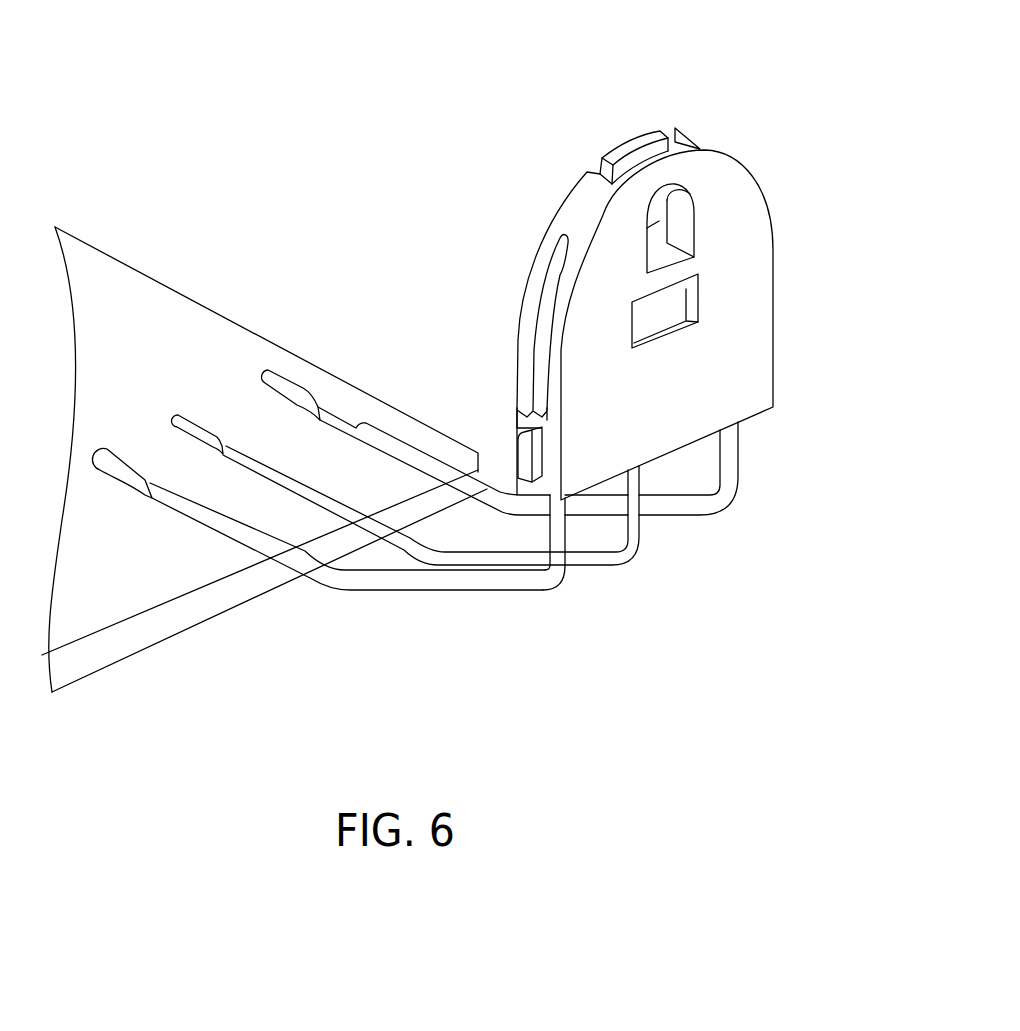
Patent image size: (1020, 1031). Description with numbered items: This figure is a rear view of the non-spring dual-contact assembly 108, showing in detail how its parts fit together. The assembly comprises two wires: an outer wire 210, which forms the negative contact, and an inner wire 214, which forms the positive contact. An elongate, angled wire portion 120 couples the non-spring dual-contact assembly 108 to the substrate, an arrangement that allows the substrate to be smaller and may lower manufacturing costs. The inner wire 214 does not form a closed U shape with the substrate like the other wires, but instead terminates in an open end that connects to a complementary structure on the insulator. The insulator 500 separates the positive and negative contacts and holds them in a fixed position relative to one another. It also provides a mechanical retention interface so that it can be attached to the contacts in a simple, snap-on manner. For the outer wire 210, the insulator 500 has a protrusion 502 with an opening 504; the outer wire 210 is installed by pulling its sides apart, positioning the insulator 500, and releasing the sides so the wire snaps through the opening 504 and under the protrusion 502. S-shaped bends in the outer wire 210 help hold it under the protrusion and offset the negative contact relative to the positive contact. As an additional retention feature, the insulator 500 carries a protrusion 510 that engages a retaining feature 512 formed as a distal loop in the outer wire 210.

The non-spring dual-contact assembly 108 is at (775, 102).
The elongate, angled wire portion 120 is at (392, 600).
The outer wire 210 is at (527, 596).
The inner wire 214 is at (610, 588).
The insulator 500 is at (657, 397).
The protrusion 502 is at (515, 431).
The opening 504 is at (514, 416).
The protrusion 510 is at (637, 136).
The retaining feature 512 is at (601, 157).